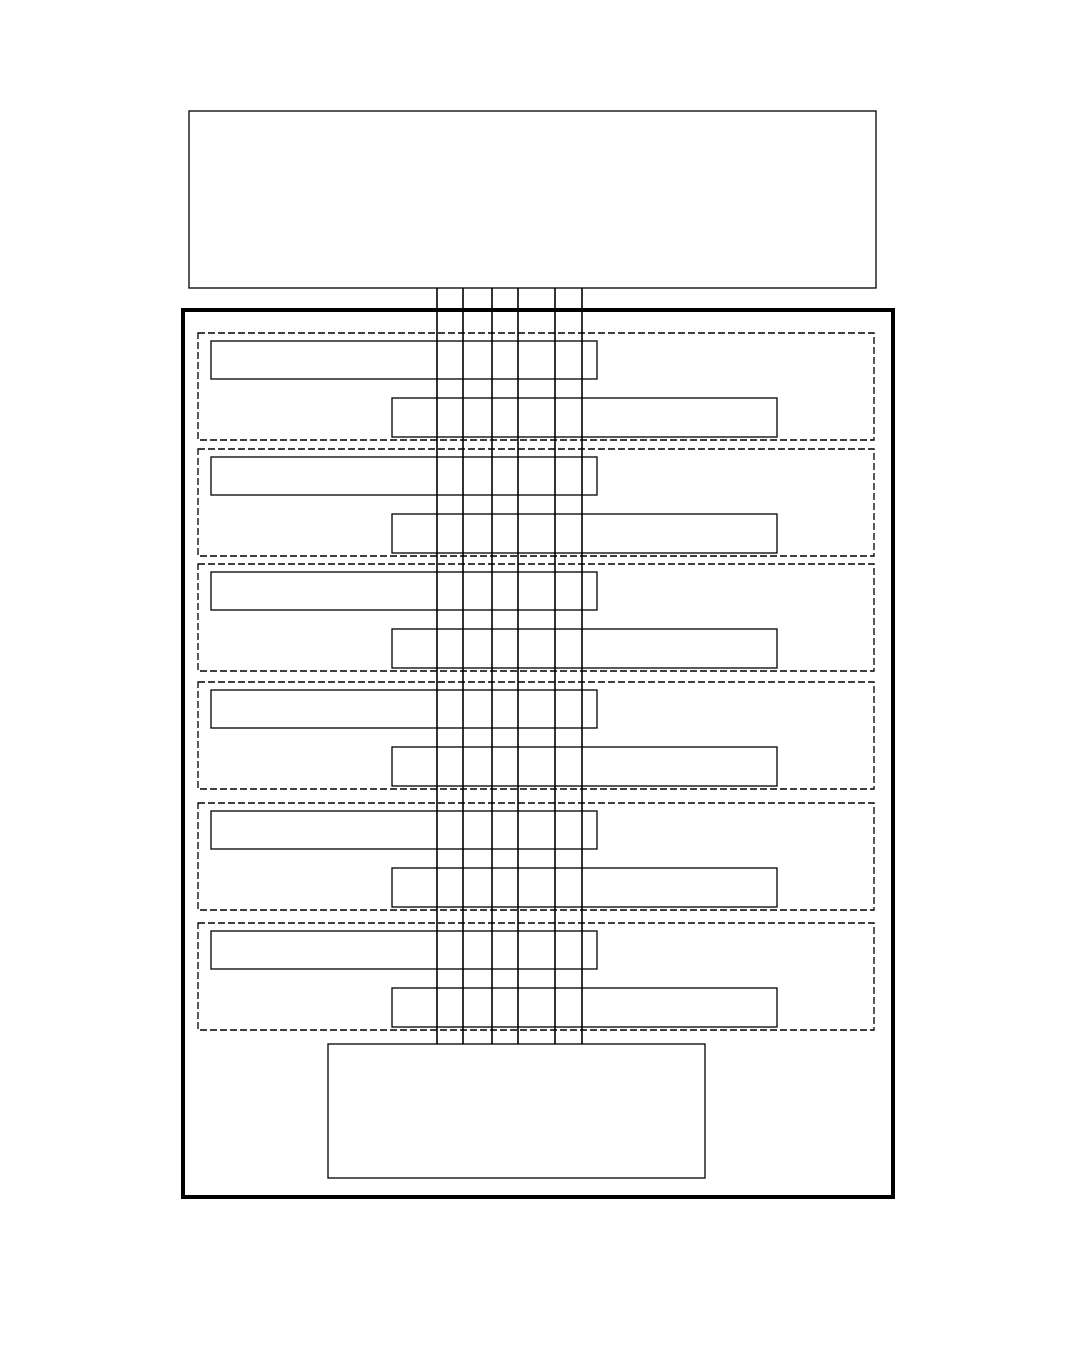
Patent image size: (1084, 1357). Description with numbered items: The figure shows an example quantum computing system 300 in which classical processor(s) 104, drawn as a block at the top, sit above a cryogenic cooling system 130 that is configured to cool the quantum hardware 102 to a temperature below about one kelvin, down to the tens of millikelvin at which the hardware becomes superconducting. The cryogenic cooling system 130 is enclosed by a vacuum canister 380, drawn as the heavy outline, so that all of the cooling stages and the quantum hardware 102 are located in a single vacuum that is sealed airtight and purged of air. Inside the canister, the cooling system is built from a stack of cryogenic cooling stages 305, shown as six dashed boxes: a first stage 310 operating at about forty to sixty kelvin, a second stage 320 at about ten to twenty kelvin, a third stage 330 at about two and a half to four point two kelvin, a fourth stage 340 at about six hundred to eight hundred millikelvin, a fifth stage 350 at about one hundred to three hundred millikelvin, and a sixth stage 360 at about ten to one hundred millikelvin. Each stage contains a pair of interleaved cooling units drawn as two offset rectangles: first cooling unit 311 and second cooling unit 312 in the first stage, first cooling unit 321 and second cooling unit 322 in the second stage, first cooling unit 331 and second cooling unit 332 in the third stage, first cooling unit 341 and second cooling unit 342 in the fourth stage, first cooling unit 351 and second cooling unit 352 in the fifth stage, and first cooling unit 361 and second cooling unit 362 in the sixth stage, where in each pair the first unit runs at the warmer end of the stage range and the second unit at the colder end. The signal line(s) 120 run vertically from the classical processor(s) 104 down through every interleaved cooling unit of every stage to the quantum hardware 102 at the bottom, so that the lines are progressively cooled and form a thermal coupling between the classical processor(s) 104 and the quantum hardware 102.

The quantum computing system 300 is at (241, 66).
The classical processor(s) 104 is at (776, 111).
The cryogenic cooling system 130 is at (137, 333).
The vacuum canister 380 is at (882, 308).
The signal line(s) 120 is at (434, 300).
The cryogenic cooling stages 305 is at (187, 440).
The first stage 310 is at (571, 386).
The first cooling unit 311 is at (598, 363).
The second cooling unit 312 is at (392, 426).
The second stage 320 is at (571, 502).
The first cooling unit 321 is at (598, 479).
The second cooling unit 322 is at (392, 542).
The third stage 330 is at (571, 617).
The first cooling unit 331 is at (598, 594).
The second cooling unit 332 is at (392, 657).
The fourth stage 340 is at (571, 735).
The first cooling unit 341 is at (598, 712).
The second cooling unit 342 is at (392, 775).
The fifth stage 350 is at (571, 856).
The first cooling unit 351 is at (598, 833).
The second cooling unit 352 is at (392, 896).
The sixth stage 360 is at (571, 976).
The first cooling unit 361 is at (598, 953).
The second cooling unit 362 is at (392, 1016).
The quantum hardware 102 is at (707, 1127).